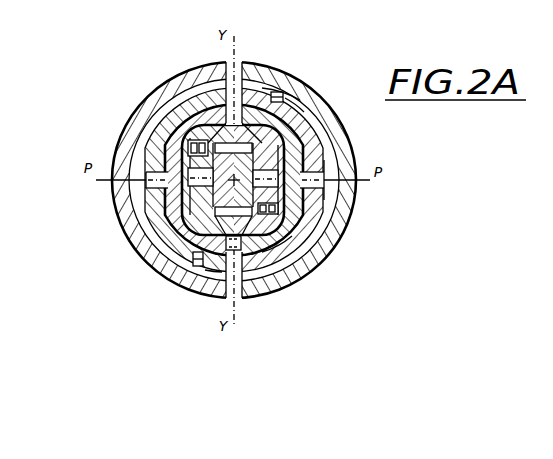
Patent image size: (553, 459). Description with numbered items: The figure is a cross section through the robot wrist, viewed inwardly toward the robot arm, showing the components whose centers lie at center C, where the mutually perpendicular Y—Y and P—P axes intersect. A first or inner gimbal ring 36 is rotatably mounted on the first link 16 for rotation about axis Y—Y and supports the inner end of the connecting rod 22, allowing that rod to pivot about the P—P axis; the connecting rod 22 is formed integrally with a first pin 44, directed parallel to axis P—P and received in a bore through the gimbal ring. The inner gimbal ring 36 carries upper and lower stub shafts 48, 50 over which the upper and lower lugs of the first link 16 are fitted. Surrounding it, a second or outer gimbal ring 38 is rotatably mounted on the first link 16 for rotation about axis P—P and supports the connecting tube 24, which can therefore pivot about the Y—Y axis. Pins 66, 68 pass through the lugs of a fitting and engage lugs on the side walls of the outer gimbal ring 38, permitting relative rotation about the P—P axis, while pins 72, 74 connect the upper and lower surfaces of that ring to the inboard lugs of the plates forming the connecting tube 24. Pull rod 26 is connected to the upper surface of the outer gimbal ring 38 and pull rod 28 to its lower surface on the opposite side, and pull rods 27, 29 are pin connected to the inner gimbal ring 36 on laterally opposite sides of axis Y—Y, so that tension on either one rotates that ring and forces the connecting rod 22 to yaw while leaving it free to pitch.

The first link 16 is at (190, 94).
The connecting rod 22 is at (190, 258).
The connecting tube 24 is at (200, 73).
The pull rod 26 is at (290, 84).
The pull rod 27 is at (190, 147).
The pull rod 28 is at (202, 271).
The pull rod 29 is at (298, 212).
The first or inner gimbal ring 36 is at (290, 256).
The second or outer gimbal ring 38 is at (298, 105).
The first pin 44 is at (318, 152).
The upper stub shaft 48 is at (274, 94).
The lower stub shaft 50 is at (206, 294).
The pin 66 is at (200, 184).
The pin 68 is at (322, 174).
The pin 72 is at (246, 80).
The pin 74 is at (246, 298).